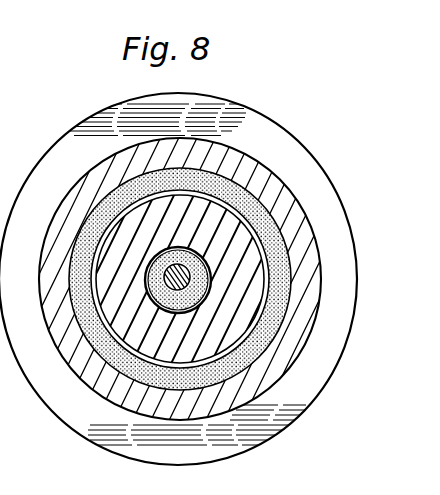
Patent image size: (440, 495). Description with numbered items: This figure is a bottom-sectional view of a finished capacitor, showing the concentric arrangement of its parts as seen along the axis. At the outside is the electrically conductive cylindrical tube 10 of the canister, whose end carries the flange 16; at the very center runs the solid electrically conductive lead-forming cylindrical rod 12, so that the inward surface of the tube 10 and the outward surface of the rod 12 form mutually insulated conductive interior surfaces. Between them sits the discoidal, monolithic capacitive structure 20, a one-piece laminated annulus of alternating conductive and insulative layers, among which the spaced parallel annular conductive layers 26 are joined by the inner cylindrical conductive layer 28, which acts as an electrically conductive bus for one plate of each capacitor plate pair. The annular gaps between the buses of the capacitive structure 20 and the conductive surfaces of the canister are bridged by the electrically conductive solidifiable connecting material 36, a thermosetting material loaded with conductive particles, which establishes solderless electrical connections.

The cylindrical tube 10 is at (290, 188).
The cylindrical rod 12 is at (200, 305).
The flange 16 is at (281, 143).
The capacitive structure 20 is at (213, 280).
The annular conductive layers 26 is at (298, 222).
The inner cylindrical conductive layer 28 is at (185, 292).
The connecting material 36 is at (282, 214).